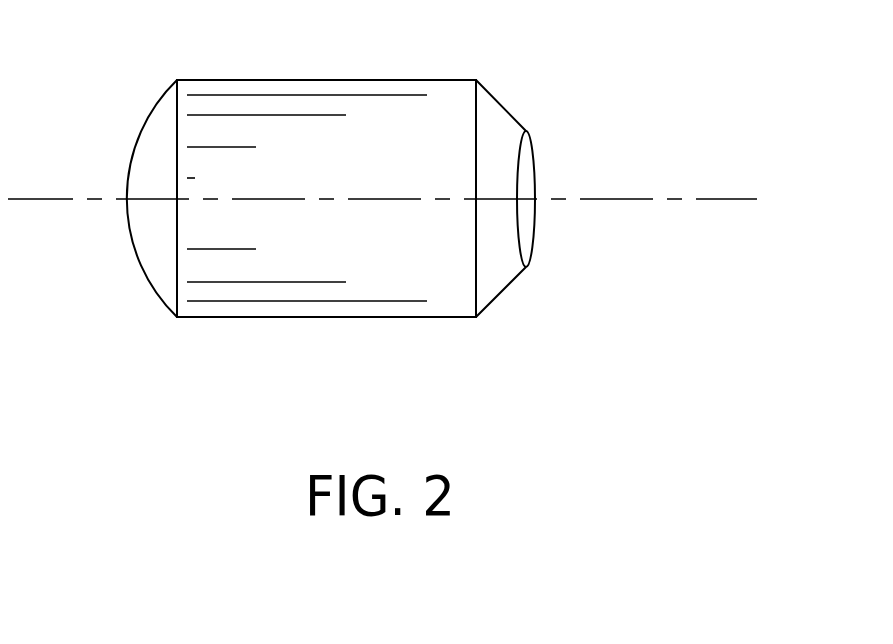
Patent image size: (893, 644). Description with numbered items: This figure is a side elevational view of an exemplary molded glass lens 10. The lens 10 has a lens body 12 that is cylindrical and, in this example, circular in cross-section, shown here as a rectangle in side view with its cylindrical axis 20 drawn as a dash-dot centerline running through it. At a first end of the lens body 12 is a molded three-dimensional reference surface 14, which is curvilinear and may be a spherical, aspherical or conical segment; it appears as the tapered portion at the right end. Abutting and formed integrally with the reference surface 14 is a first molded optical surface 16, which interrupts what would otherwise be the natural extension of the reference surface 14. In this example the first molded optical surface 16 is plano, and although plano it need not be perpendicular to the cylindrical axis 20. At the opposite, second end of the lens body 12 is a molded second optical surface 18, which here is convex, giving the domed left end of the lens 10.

The molded glass lens 10 is at (245, 352).
The lens body 12 is at (412, 80).
The molded three-dimensional reference surface 14 is at (498, 100).
The first molded optical surface 16 is at (528, 238).
The molded second optical surface 18 is at (132, 239).
The cylindrical axis 20 is at (716, 199).